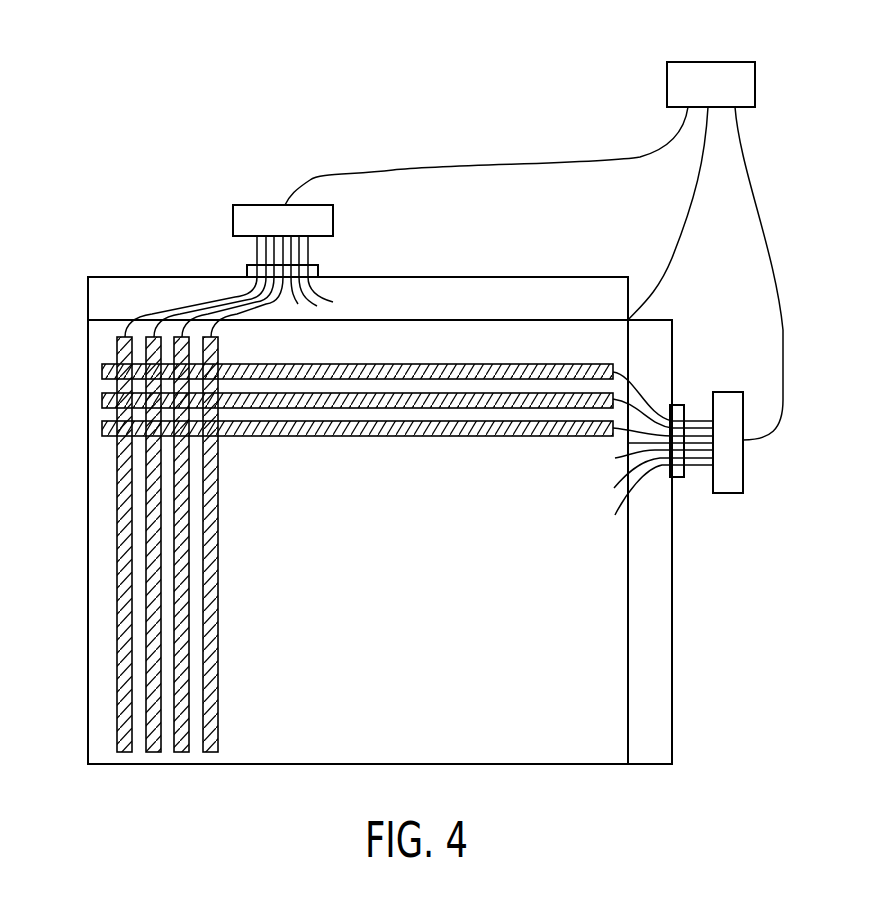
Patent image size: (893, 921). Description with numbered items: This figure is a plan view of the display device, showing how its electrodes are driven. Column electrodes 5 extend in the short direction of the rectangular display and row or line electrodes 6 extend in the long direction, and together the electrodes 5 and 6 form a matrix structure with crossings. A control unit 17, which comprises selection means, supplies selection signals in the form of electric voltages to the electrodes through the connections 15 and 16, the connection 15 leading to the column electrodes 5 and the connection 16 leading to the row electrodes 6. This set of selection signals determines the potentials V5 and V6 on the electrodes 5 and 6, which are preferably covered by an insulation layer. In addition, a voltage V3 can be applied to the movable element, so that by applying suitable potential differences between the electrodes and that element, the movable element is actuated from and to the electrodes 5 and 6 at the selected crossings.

The column electrodes 5 is at (127, 713).
The row electrodes 6 is at (487, 364).
The connection 15 is at (253, 252).
The connection 16 is at (699, 470).
The control unit 17 is at (703, 70).
The potential on electrodes 5 V5 is at (177, 307).
The potential on electrodes 6 V6 is at (643, 493).
The voltage applied to the element V3 is at (534, 273).